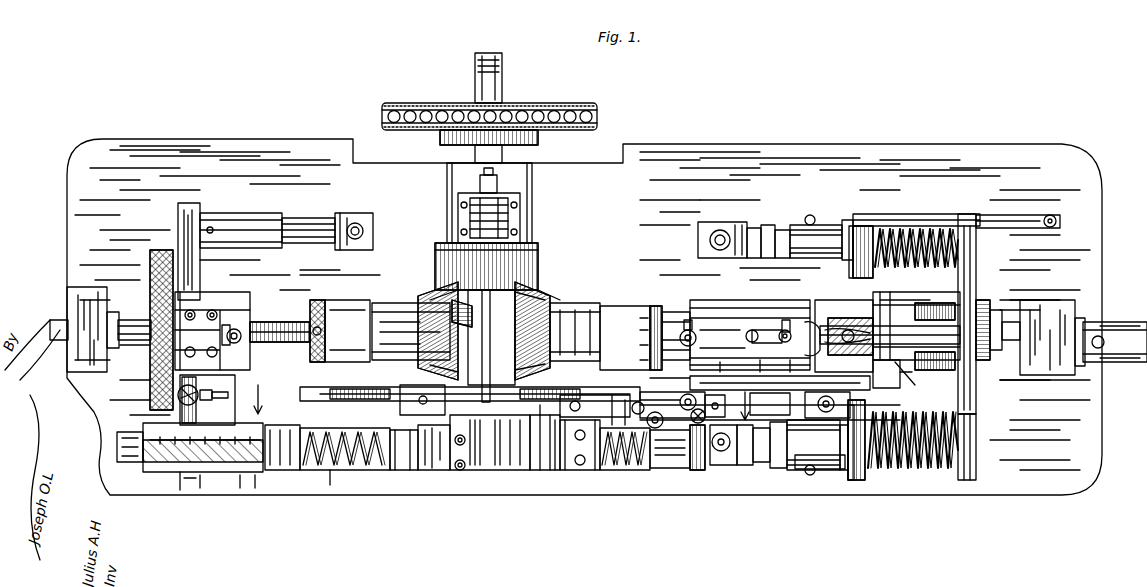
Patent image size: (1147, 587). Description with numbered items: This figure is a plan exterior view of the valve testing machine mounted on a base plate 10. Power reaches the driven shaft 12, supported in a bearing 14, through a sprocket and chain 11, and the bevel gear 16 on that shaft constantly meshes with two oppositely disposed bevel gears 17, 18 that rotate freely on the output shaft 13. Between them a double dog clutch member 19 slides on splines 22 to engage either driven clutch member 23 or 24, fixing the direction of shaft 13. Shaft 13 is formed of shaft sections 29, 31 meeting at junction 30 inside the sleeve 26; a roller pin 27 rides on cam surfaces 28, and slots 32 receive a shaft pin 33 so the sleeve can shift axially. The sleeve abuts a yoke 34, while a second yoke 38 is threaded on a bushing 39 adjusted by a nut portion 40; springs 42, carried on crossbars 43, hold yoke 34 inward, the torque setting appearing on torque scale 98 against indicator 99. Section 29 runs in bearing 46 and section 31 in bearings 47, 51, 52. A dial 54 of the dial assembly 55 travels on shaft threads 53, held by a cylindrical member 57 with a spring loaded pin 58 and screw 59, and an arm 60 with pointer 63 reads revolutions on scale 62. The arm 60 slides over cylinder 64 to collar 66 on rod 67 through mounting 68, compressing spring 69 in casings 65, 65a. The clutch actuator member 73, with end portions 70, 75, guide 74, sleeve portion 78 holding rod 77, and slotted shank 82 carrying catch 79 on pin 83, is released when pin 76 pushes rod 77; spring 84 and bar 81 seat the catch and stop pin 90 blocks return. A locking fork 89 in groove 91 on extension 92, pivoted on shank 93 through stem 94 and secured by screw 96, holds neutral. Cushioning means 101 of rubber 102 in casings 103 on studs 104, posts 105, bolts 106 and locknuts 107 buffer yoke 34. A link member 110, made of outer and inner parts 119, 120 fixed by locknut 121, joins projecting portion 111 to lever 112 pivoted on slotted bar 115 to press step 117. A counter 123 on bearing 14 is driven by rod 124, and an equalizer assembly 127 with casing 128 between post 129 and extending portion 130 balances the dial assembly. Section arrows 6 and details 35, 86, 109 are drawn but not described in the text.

The base plate 10 is at (192, 139).
The sprocket and chain 11 is at (418, 103).
The driven shaft 12 is at (488, 53).
The output shaft 13 is at (130, 318).
The bearing 14 is at (532, 181).
The bevel gear 16 is at (538, 256).
The bevel gear 17 is at (553, 292).
The bevel gear 18 is at (388, 303).
The double dog clutch member 19 is at (470, 295).
The splines 22 is at (455, 300).
The driven clutch member 23 is at (548, 318).
The driven clutch member 24 is at (400, 325).
The sleeve 26 is at (712, 300).
The roller pin 27 is at (688, 318).
The cam surfaces 28 is at (686, 328).
The shaft section 29 is at (785, 330).
The junction of shaft sections 30 is at (770, 330).
The shaft section 31 is at (750, 330).
The longitudinal slots 32 is at (720, 321).
The shaft pin 33 is at (786, 320).
The yoke 34 is at (888, 310).
The clutch member 35 is at (941, 366).
The yoke 38 is at (978, 244).
The threaded bushing 39 is at (925, 303).
The nut portion 40 is at (1000, 310).
The springs 42 is at (920, 229).
The crossbars 43 is at (868, 214).
The bearing 46 is at (1052, 300).
The bearing 47 is at (612, 306).
The bearing 51 is at (330, 300).
The bearing 52 is at (78, 287).
The shaft threads 53 is at (270, 322).
The dial 54 is at (160, 250).
The dial assembly 55 is at (176, 295).
The cylindrical member 57 is at (196, 292).
The spring loaded pin 58 is at (226, 325).
The screw 59 is at (238, 330).
The arm 60 is at (165, 400).
The scale 62 is at (220, 502).
The pointer 63 is at (200, 475).
The cylinder 64 is at (130, 462).
The casing 65 is at (605, 470).
The casing 65a is at (340, 470).
The collar 66 is at (240, 475).
The rod 67 is at (262, 475).
The mounting 68 is at (430, 470).
The spring 69 is at (628, 470).
The end portion 70 is at (693, 470).
The clutch actuator member 73 is at (395, 475).
The guide 74 is at (482, 365).
The end portion 75 is at (285, 470).
The pin 76 is at (207, 400).
The rod 77 is at (322, 470).
The sleeve portion 78 is at (395, 465).
The catch 79 is at (575, 332).
The bar 81 is at (470, 470).
The slotted shank 82 is at (400, 386).
The pin 83 is at (404, 375).
The spring 84 is at (560, 470).
The block 86 is at (665, 470).
The locking fork 89 is at (580, 470).
The stop pin 90 is at (813, 445).
The circumferential groove 91 is at (629, 339).
The extension 92 is at (640, 470).
The shank 93 is at (655, 470).
The stem 94 is at (625, 388).
The screw 96 is at (615, 470).
The torque scale 98 is at (890, 372).
The indicator 99 is at (818, 322).
The cushioning means 101 is at (800, 225).
The rubber 102 is at (852, 214).
The cylindrical casing 103 is at (845, 220).
The studs 104 is at (750, 228).
The posts 105 is at (765, 225).
The bolts 106 is at (710, 240).
The locknuts 107 is at (780, 230).
The sleeve 109 is at (631, 311).
The link member 110 is at (783, 360).
The projecting portion 111 is at (882, 392).
The lever 112 is at (713, 360).
The slotted bar 115 is at (630, 324).
The step 117 is at (670, 312).
The outer part 119 is at (780, 371).
The inner part 120 is at (722, 340).
The locknut 121 is at (753, 360).
The counter 123 is at (520, 215).
The rod 124 is at (540, 470).
The equalizer assembly 127 is at (215, 213).
The extensible casing 128 is at (275, 213).
The post 129 is at (345, 213).
The extending portion 130 is at (178, 210).
The section line 6 is at (517, 402).